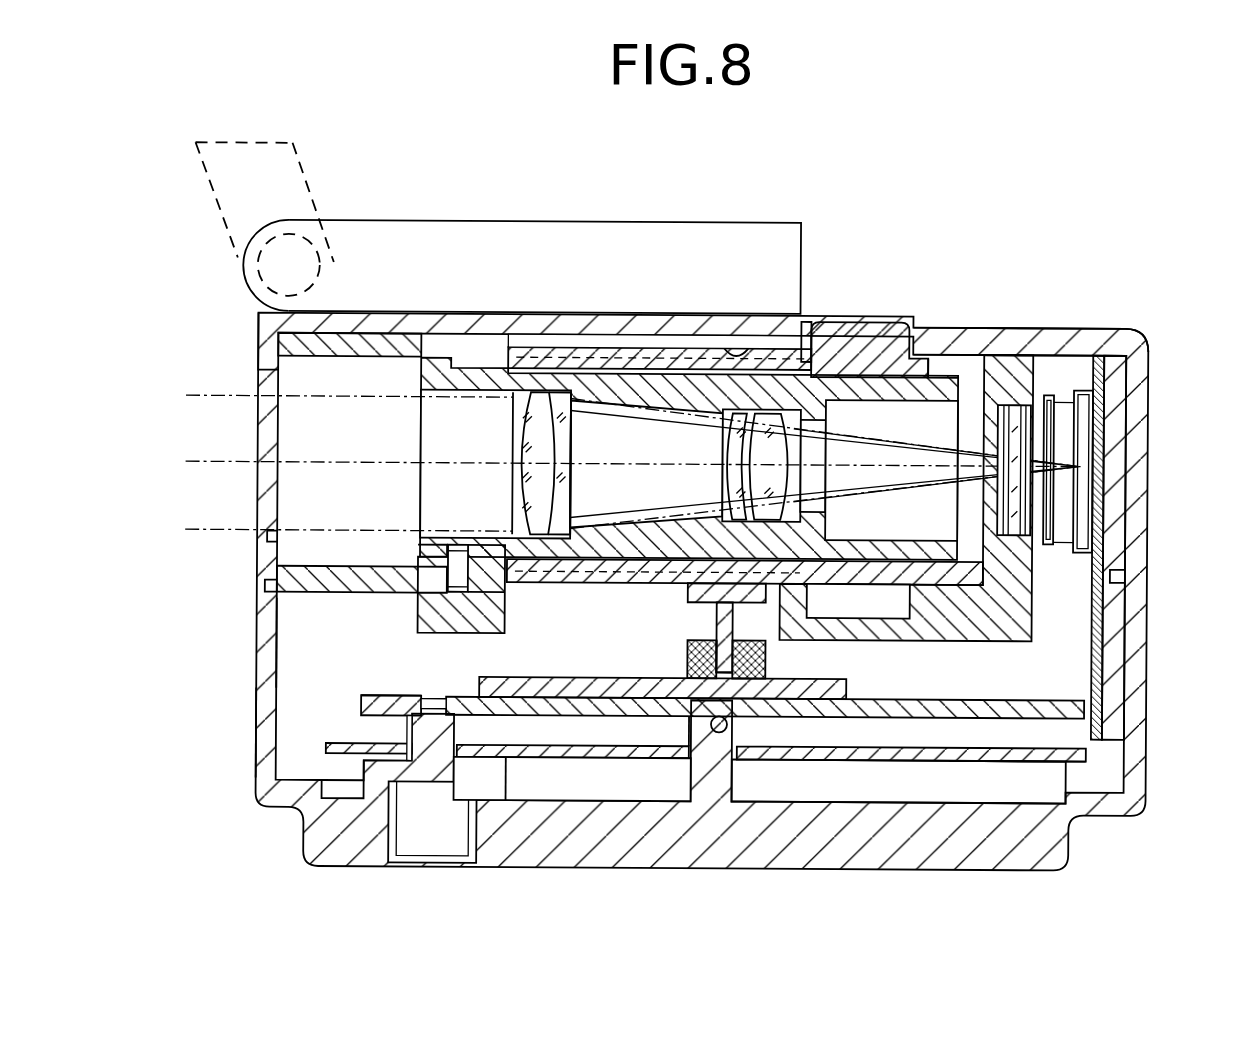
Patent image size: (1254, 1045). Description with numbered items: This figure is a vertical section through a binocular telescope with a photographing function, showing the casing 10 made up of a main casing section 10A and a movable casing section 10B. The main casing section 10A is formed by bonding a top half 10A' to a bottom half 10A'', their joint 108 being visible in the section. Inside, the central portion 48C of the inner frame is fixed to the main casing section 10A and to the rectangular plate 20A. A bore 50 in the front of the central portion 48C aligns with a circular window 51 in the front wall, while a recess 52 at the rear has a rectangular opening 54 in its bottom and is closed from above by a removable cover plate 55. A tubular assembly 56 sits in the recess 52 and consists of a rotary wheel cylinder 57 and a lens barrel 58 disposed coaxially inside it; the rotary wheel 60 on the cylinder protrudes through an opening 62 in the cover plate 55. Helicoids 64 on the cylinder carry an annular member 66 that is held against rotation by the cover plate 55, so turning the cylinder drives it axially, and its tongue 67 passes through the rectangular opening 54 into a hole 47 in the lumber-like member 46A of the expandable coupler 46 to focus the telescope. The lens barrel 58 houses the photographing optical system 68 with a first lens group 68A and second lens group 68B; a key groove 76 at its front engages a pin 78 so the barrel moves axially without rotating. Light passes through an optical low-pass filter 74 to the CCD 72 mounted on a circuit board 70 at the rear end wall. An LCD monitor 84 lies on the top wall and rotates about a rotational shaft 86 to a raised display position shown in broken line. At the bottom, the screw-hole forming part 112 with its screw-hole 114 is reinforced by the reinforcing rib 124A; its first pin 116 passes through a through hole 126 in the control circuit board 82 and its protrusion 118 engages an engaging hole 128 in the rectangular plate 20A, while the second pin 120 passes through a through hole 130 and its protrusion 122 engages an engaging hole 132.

The casing 10 is at (230, 338).
The main casing section 10A is at (202, 732).
The top half 10A' is at (214, 345).
The bottom half 10A'' is at (210, 642).
The movable casing section 10B is at (1150, 540).
The rectangular plate 20A is at (403, 696).
The expandable coupler 46 is at (770, 655).
The lumber-like member 46A is at (686, 660).
The hole 47 is at (732, 645).
The central portion 48C is at (910, 642).
The bore 50 is at (322, 570).
The circular window 51 is at (265, 546).
The recess 52 is at (963, 353).
The rectangular opening 54 is at (510, 621).
The cover plate 55 is at (683, 356).
The tubular assembly 56 is at (944, 371).
The rotary wheel cylinder 57 is at (607, 571).
The lens barrel 58 is at (887, 531).
The rotary wheel 60 is at (887, 321).
The opening 62 is at (807, 340).
The helicoids 64 is at (632, 344).
The annular member 66 is at (735, 348).
The tongue 67 is at (716, 615).
The photographing optical system 68 is at (498, 434).
The first lens group 68A is at (577, 438).
The second lens group 68B is at (714, 486).
The circuit board 70 is at (1092, 665).
The CCD 72 is at (1062, 554).
The optical low-pass filter 74 is at (991, 438).
The key groove 76 is at (442, 548).
The pin 78 is at (472, 595).
The control circuit board 82 is at (977, 759).
The LCD monitor 84 is at (625, 221).
The rotational shaft 86 is at (318, 269).
The joint 108 is at (267, 587).
The screw-hole forming part 112 is at (362, 786).
The screw-hole 114 is at (405, 832).
The first pin 116 is at (408, 737).
The protrusion 118 is at (445, 699).
The second pin 120 is at (698, 780).
The protrusion 122 is at (688, 718).
The reinforcing rib 124A is at (878, 822).
The through hole 126 is at (460, 747).
The engaging hole 128 is at (450, 699).
The through hole 130 is at (744, 760).
The engaging hole 132 is at (730, 727).